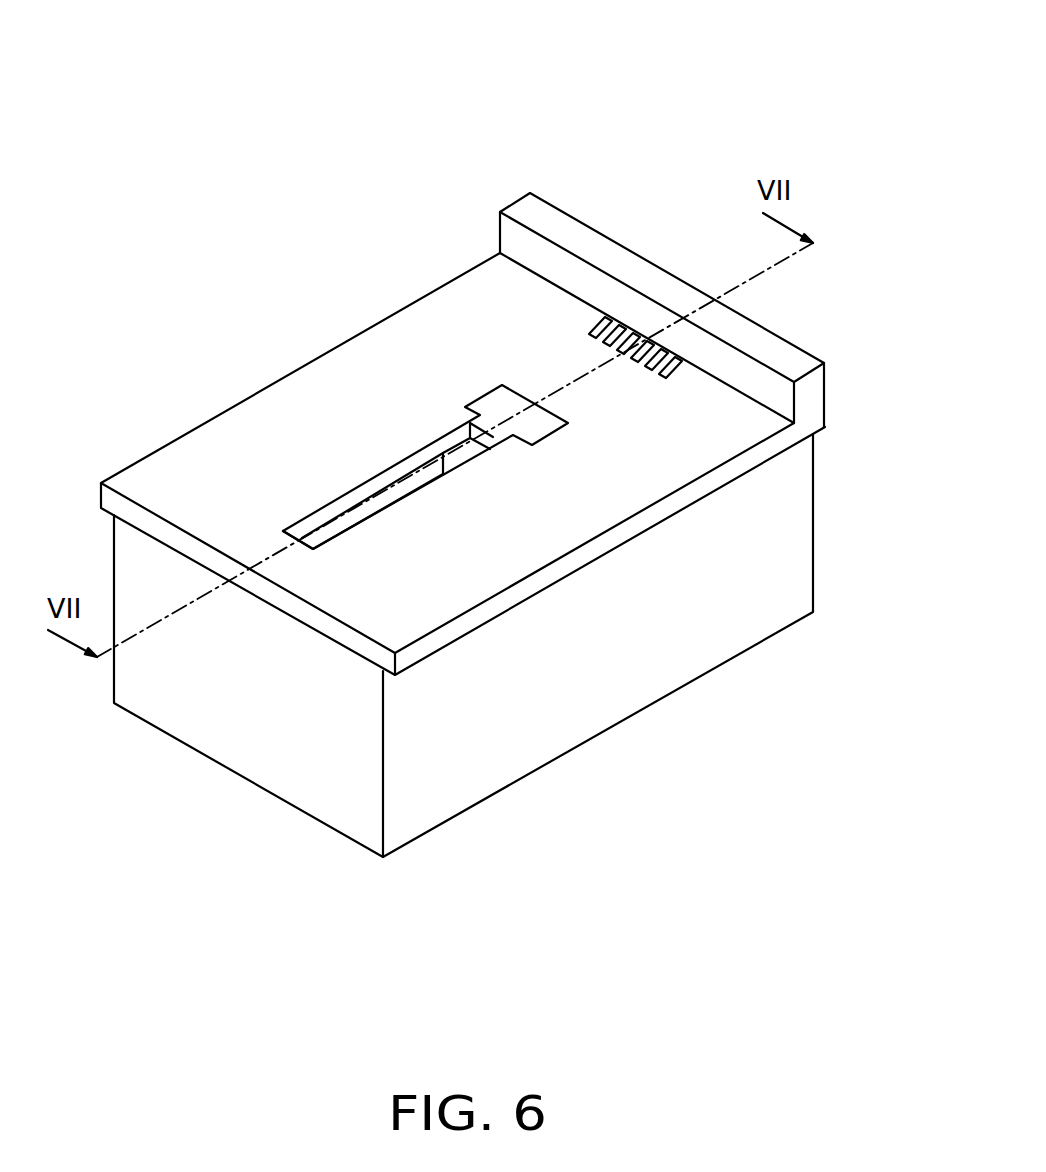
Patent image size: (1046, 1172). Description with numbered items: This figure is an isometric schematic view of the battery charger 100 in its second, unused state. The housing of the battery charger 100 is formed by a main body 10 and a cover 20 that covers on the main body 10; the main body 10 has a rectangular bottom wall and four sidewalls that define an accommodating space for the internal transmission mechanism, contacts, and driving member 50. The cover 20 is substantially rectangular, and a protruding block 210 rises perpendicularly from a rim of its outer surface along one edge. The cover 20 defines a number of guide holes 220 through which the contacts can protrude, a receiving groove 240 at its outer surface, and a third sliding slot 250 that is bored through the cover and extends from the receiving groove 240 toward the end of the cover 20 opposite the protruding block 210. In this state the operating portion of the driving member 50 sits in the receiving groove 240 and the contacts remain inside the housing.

The battery charger 100 is at (295, 75).
The main body 10 is at (652, 652).
The cover 20 is at (370, 373).
The protruding block 210 is at (753, 345).
The guide holes 220 is at (607, 318).
The receiving groove 240 is at (528, 392).
The third sliding slot 250 is at (352, 500).
The driving member 50 is at (498, 407).